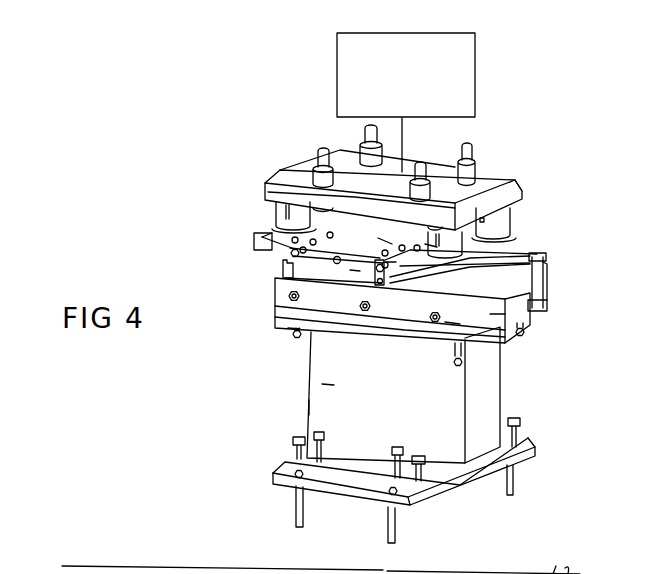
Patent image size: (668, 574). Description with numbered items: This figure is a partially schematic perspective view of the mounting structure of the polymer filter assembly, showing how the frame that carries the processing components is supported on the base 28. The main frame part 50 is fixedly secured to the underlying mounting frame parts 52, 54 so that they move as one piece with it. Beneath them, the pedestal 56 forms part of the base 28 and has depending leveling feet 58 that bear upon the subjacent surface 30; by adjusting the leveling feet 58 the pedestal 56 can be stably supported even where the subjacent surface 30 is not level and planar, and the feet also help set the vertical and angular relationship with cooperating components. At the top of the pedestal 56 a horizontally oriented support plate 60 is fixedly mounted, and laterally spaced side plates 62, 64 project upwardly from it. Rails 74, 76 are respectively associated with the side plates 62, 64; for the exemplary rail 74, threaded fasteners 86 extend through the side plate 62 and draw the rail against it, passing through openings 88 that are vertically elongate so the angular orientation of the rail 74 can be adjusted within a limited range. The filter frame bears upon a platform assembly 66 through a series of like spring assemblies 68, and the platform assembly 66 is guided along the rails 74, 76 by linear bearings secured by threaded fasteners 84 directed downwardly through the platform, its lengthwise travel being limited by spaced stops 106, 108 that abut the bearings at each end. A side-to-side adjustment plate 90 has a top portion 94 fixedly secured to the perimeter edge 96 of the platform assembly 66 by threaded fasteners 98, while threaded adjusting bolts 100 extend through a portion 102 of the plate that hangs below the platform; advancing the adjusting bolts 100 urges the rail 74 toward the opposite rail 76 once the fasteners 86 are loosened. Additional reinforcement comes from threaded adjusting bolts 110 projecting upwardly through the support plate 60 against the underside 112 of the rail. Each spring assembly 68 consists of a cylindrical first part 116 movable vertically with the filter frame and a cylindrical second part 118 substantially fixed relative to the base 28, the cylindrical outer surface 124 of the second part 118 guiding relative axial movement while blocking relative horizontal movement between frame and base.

The base 28 is at (292, 330).
The subjacent surface 30 is at (490, 523).
The main frame part 50 is at (445, 100).
The mounting frame part 52 is at (495, 173).
The mounting frame part 54 is at (300, 187).
The pedestal 56 is at (445, 403).
The leveling feet 58 is at (303, 510).
The support plate 60 is at (500, 312).
The side plate 62 is at (446, 322).
The side plate 64 is at (538, 282).
The platform assembly 66 is at (530, 258).
The spring assemblies 68 is at (509, 219).
The rail 74 is at (430, 246).
The rail 76 is at (517, 258).
The threaded fasteners 84 is at (482, 228).
The threaded fasteners 86 is at (295, 301).
The openings 88 is at (287, 268).
The side-to-side adjustment plate 90 is at (355, 270).
The top portion 94 is at (354, 256).
The perimeter edge 96 is at (268, 241).
The threaded fasteners 98 is at (338, 257).
The threaded adjusting bolts 100 is at (299, 412).
The portion 102 is at (383, 243).
The stop 106 is at (262, 238).
The stop 108 is at (545, 263).
The threaded adjusting bolts 110 is at (458, 362).
The underside 112 is at (513, 313).
The first part 116 is at (400, 240).
The second part 118 is at (390, 264).
The cylindrical outer surface 124 is at (328, 385).